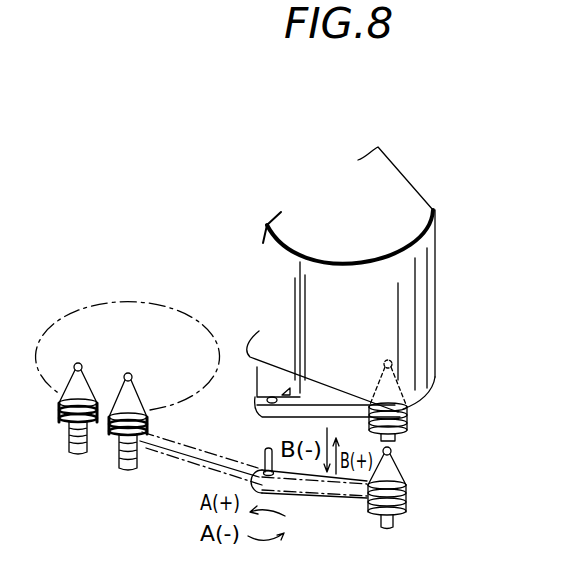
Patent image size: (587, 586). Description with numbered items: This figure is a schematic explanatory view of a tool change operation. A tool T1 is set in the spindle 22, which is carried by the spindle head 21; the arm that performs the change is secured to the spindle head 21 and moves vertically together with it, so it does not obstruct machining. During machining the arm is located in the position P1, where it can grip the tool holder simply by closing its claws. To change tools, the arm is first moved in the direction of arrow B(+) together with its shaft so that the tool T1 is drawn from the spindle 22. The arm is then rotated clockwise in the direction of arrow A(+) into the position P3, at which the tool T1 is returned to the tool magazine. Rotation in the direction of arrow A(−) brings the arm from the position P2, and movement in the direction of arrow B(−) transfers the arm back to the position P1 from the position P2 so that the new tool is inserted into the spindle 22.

The spindle head 21 is at (433, 212).
The spindle 22 is at (410, 405).
The tool T1 is at (108, 443).
The position P1 is at (277, 432).
The position P2 is at (334, 541).
The position P3 is at (168, 458).